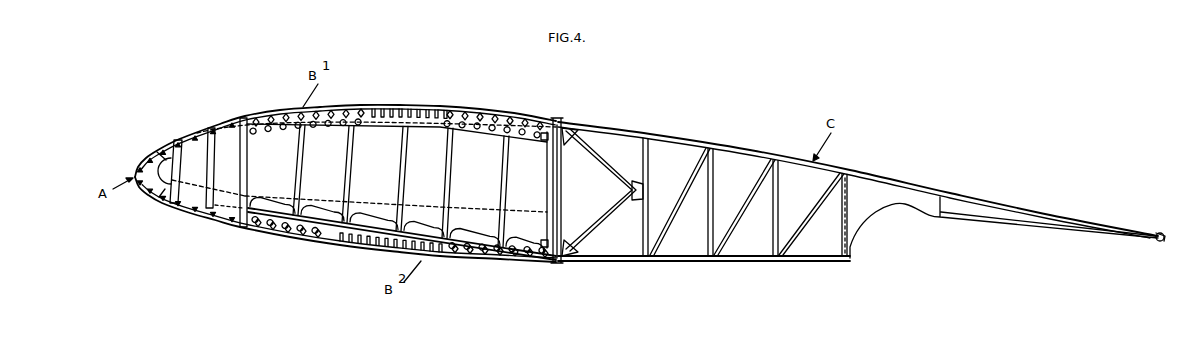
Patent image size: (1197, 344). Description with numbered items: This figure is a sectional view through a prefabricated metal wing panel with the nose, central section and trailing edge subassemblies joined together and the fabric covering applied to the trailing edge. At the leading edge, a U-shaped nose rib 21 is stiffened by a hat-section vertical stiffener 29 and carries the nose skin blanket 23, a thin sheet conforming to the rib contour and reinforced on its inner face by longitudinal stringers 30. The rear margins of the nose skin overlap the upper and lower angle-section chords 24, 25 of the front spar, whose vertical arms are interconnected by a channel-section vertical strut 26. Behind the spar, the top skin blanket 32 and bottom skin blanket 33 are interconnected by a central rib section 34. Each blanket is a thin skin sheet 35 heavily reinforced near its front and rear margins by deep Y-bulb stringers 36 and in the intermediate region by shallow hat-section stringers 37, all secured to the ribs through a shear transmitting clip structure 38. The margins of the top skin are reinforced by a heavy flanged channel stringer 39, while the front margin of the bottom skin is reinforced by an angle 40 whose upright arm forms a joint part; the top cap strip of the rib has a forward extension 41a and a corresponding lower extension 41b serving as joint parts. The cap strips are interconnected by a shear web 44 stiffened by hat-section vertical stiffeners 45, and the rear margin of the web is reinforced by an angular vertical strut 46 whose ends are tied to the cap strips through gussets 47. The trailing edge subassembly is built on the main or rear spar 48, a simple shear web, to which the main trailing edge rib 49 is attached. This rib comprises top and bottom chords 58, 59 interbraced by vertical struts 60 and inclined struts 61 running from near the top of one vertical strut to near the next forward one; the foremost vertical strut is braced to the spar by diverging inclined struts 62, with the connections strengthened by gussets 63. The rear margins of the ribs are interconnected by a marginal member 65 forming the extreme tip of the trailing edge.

The nose rib 21 is at (197, 199).
The nose skin blanket 23 is at (190, 128).
The upper angle-section chord 24 is at (256, 118).
The lower angle-section chord 25 is at (243, 231).
The vertical strut 26 is at (249, 191).
The vertical stiffener 29 is at (180, 163).
The longitudinal stringer 30 is at (193, 214).
The top skin blanket 32 is at (342, 108).
The bottom skin blanket 33 is at (342, 250).
The central rib section 34 is at (376, 164).
The skin sheet 35 is at (490, 115).
The Y-bulb section stringer 36 is at (515, 121).
The hat section stringer 37 is at (402, 108).
The shear transmitting clip structure 38 is at (440, 111).
The flanged channel section stringer 39 is at (558, 119).
The angle 40 is at (259, 230).
The forward extension of top cap strip 41a is at (222, 127).
The lower nose member 41b is at (226, 218).
The shear web 44 is at (424, 178).
The vertical stiffener 45 is at (390, 188).
The vertical strut 46 is at (547, 182).
The gusset 47 is at (544, 138).
The main or rear spar 48 is at (561, 190).
The main trailing edge rib 49 is at (683, 137).
The top chord 58 is at (735, 150).
The bottom chord 59 is at (683, 260).
The vertical strut 60 is at (648, 180).
The inclined strut 61 is at (668, 231).
The inclined strut 62 is at (604, 172).
The gusset 63 is at (578, 138).
The marginal member 65 is at (1162, 242).